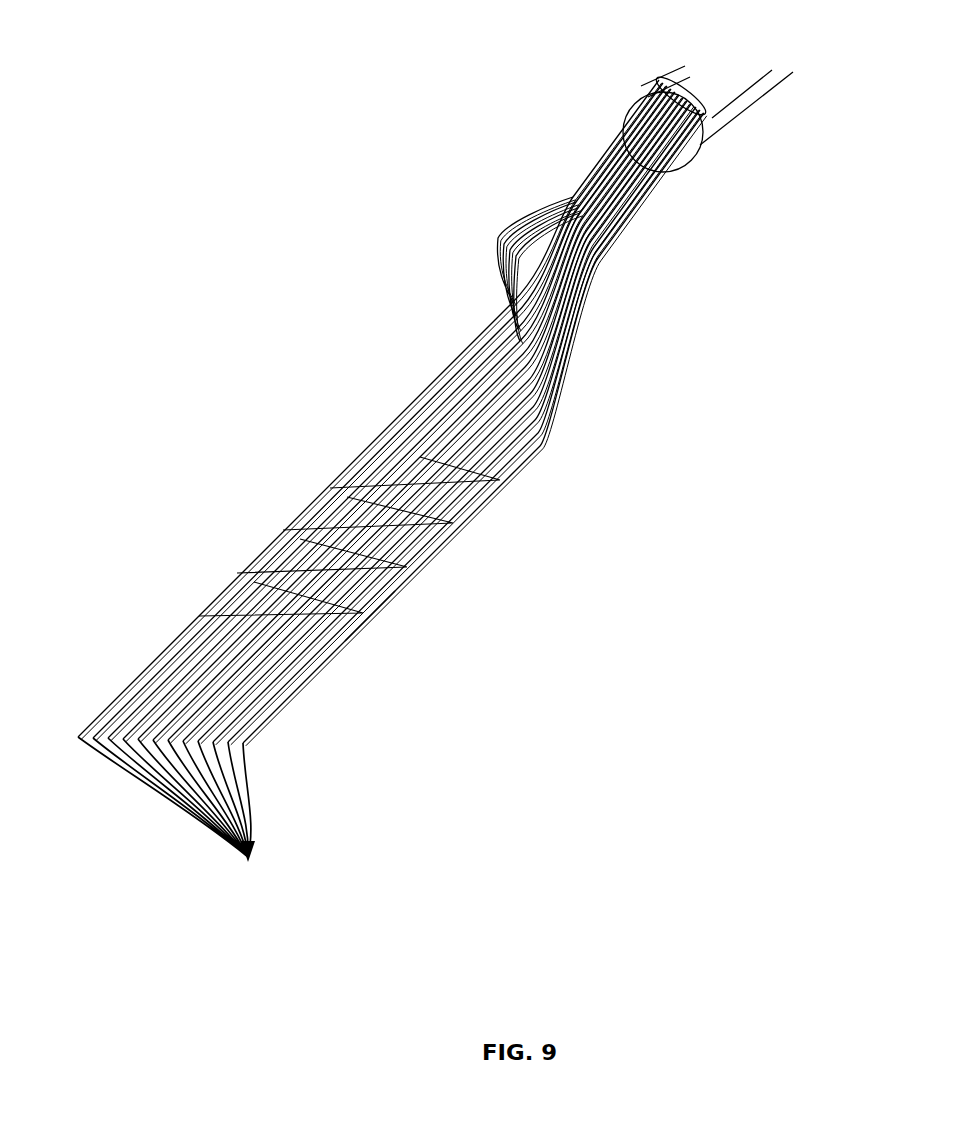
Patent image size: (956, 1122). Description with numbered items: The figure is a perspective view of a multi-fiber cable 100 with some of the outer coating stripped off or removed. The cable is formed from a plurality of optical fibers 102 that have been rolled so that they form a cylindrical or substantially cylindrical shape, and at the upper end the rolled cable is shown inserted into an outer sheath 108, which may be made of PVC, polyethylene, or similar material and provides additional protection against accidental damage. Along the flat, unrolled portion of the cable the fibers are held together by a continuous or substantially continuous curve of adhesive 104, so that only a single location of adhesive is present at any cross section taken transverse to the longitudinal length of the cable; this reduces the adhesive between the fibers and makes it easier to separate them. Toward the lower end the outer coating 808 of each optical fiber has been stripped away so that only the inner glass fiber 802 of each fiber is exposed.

The multi-fiber cable 100 is at (342, 190).
The optical fibers 102 is at (475, 513).
The adhesive 104 is at (405, 568).
The outer sheath 108 is at (653, 90).
The inner glass fiber 802 is at (170, 813).
The outer coating 808 is at (367, 623).